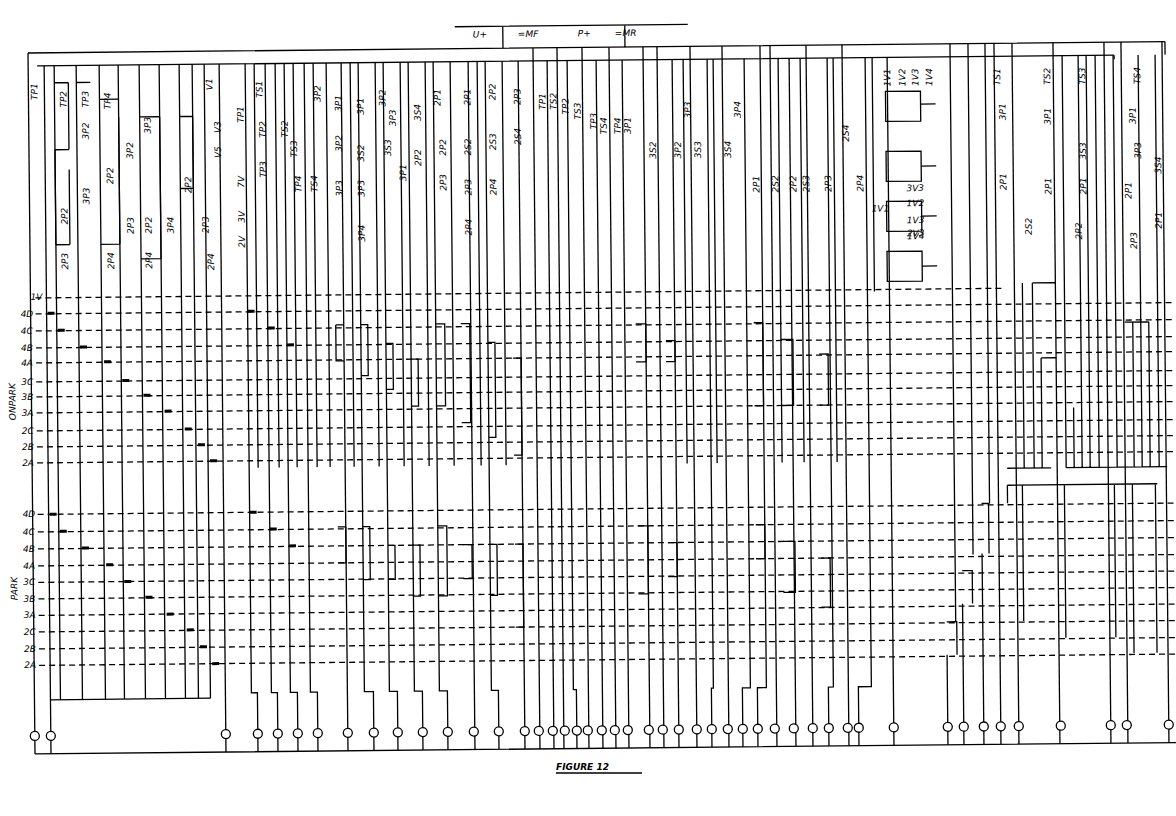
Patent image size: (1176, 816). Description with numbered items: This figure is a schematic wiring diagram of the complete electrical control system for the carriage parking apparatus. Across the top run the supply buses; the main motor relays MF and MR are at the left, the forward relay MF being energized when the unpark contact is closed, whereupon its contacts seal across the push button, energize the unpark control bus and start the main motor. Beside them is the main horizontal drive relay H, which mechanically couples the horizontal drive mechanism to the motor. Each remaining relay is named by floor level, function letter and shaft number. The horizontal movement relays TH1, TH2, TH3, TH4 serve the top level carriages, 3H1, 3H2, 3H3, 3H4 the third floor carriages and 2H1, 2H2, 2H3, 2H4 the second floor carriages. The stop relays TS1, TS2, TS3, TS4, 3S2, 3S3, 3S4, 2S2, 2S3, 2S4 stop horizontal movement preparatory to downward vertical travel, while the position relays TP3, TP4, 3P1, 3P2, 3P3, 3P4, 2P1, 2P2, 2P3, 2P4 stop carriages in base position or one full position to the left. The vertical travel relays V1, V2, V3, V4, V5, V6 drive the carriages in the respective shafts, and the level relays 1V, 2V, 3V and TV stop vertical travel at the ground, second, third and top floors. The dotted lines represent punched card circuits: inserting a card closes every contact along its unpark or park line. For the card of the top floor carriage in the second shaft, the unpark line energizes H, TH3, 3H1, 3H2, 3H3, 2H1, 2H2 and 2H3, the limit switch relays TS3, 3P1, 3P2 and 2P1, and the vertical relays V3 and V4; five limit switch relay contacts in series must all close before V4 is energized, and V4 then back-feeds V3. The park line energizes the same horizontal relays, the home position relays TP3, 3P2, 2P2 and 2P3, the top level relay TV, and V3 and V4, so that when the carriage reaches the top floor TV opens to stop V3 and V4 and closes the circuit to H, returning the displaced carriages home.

The main motor forward relay MF is at (27, 403).
The main motor reverse relay MR is at (43, 410).
The main horizontal drive relay H is at (218, 408).
The top floor shaft one carriage horizontal movement relay TH1 is at (250, 408).
The top floor shaft two carriage horizontal movement relay TH2 is at (270, 408).
The top floor shaft three carriage horizontal movement relay TH3 is at (290, 407).
The top floor shaft four carriage horizontal movement relay TH4 is at (310, 407).
The third floor shaft one carriage horizontal movement relay 3H1 is at (340, 407).
The third floor shaft two carriage horizontal movement relay 3H2 is at (366, 407).
The third floor shaft three carriage horizontal movement relay 3H3 is at (390, 406).
The third floor shaft four carriage horizontal movement relay 3H4 is at (415, 406).
The second floor shaft one carriage horizontal movement relay 2H1 is at (440, 406).
The second floor shaft two carriage horizontal movement relay 2H2 is at (466, 406).
The second floor shaft three carriage horizontal movement relay 2H3 is at (491, 405).
The second floor shaft four carriage horizontal movement relay 2H4 is at (517, 405).
The top floor shaft one stop limit switch relay TS1 is at (531, 398).
The second floor shaft one position limit switch relay 2P1 is at (545, 405).
The top floor shaft two stop limit switch relay TS2 is at (557, 398).
The second floor shaft two position limit switch relay 2P2 is at (569, 405).
The top floor shaft three stop limit switch relay TS3 is at (580, 397).
The top floor shaft three position limit switch relay TP3 is at (594, 404).
The top floor shaft four stop limit switch relay TS4 is at (607, 397).
The top floor shaft four position limit switch relay TP4 is at (620, 404).
The third floor shaft one position limit switch relay 3P1 is at (641, 397).
The third floor shaft two stop limit switch relay 3S2 is at (655, 397).
The third floor shaft two position limit switch relay 3P2 is at (671, 404).
The third floor shaft three stop limit switch relay 3S3 is at (689, 396).
The third floor shaft three position limit switch relay 3P3 is at (704, 403).
The third floor shaft four stop limit switch relay 3S4 is at (720, 396).
The third floor shaft four position limit switch relay 3P4 is at (737, 403).
The second floor shaft two stop limit switch relay 2S2 is at (767, 396).
The second floor shaft three stop limit switch relay 2S3 is at (805, 395).
The second floor shaft three position limit switch relay 2P3 is at (821, 402).
The second floor shaft four stop limit switch relay 2S4 is at (840, 395).
The second floor shaft four position limit switch relay 2P4 is at (855, 402).
The ground level vertical stop relay 1V is at (886, 401).
The second level vertical stop relay 2V is at (943, 700).
The third level vertical stop relay 3V is at (958, 674).
The top level limit switch relay TV is at (979, 648).
The shaft one vertical travel relay V1 is at (993, 393).
The shaft two vertical travel relay V2 is at (1011, 393).
The shaft three vertical travel relay V3 is at (1053, 393).
The shaft four vertical travel relay V4 is at (1103, 392).
The shaft five vertical travel relay V5 is at (1119, 392).
The shaft six vertical travel relay V6 is at (1161, 392).